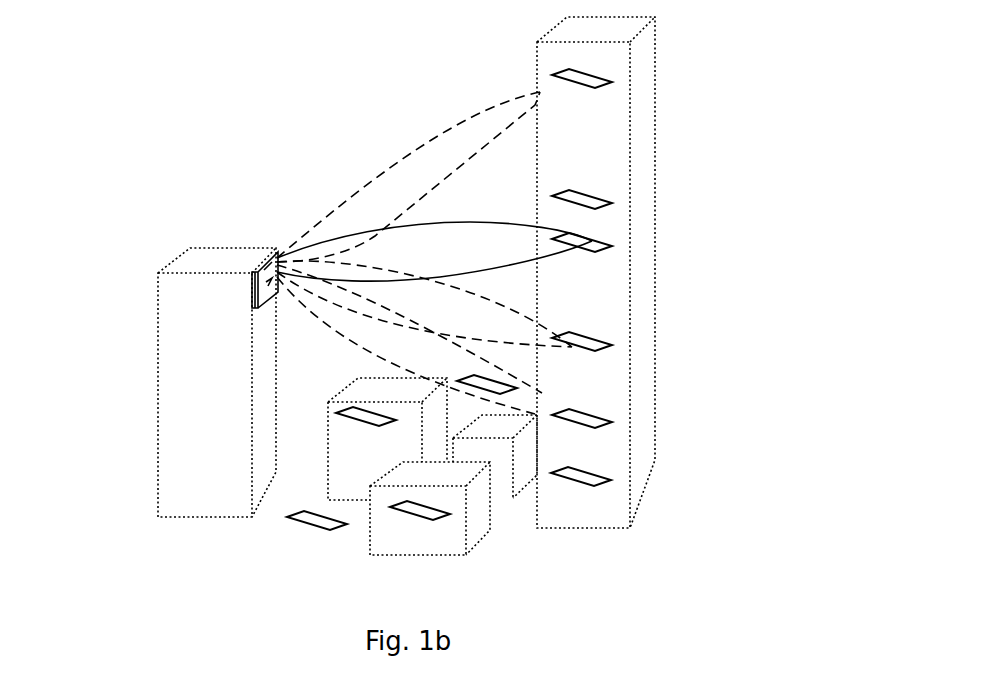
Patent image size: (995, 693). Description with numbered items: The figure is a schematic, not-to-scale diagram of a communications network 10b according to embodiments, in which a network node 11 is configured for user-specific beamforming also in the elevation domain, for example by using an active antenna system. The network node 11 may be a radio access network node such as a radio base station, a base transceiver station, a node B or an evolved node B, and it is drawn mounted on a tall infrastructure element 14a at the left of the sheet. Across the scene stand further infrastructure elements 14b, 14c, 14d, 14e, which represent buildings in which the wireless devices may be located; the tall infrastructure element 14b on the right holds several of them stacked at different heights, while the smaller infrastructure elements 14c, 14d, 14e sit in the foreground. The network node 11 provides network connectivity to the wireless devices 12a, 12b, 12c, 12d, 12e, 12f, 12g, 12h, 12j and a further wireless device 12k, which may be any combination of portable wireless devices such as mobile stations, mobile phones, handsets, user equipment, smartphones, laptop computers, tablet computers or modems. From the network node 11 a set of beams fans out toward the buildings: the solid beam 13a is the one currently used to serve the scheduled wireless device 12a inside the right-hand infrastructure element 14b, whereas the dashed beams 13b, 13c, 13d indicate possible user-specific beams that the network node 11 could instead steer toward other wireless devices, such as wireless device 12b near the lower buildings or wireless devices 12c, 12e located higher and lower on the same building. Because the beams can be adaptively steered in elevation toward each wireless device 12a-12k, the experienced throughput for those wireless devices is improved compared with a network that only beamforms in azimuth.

The communications network 10b is at (196, 93).
The network node 11 is at (253, 273).
The wireless device 12a is at (600, 245).
The wireless device 12b is at (520, 385).
The wireless device 12c is at (600, 85).
The wireless device 12d is at (600, 198).
The wireless device 12e is at (600, 340).
The wireless device 12f is at (598, 425).
The wireless device 12g is at (598, 482).
The wireless device 12h is at (433, 515).
The wireless device 12j is at (318, 532).
The wireless device 12k is at (383, 420).
The beam 13a is at (523, 223).
The beam 13b is at (510, 375).
The beam 13c is at (520, 308).
The beam 13d is at (420, 140).
The infrastructure element 14a is at (181, 496).
The infrastructure element 14b is at (643, 435).
The infrastructure element 14c is at (502, 482).
The infrastructure element 14d is at (452, 537).
The infrastructure element 14e is at (338, 430).